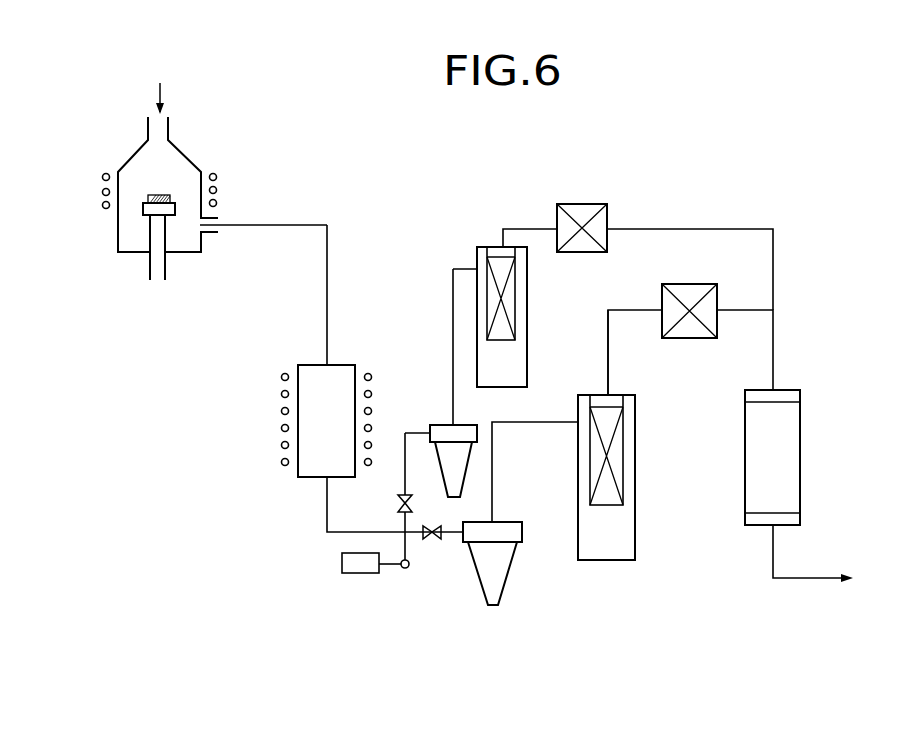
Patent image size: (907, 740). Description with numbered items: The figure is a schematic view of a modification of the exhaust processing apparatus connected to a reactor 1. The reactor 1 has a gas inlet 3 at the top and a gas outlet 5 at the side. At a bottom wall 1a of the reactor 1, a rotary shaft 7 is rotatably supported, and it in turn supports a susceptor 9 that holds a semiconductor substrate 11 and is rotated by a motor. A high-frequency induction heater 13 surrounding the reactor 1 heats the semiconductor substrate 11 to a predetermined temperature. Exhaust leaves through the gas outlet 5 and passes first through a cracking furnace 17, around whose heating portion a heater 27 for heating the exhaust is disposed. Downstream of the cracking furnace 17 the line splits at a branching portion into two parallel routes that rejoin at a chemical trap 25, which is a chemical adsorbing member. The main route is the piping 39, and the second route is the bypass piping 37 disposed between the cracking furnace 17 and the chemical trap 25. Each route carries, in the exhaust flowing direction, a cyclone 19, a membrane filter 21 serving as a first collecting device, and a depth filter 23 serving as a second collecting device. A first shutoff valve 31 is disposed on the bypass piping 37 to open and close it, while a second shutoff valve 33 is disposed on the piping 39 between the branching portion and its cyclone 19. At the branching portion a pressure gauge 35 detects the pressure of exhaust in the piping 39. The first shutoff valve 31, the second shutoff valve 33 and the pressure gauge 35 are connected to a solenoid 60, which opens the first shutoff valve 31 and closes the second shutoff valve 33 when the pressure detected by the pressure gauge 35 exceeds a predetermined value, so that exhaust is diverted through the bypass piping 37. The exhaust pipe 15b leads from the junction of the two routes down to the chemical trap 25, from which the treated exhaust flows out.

The reactor 1 is at (113, 243).
The bottom wall 1a is at (128, 254).
The gas inlet 3 is at (170, 127).
The gas outlet 5 is at (208, 233).
The rotary shaft 7 is at (165, 268).
The susceptor 9 is at (143, 210).
The semiconductor substrate 11 is at (160, 195).
The high-frequency induction heater 13 is at (101, 177).
The exhaust pipe 15b is at (775, 308).
The cracking furnace 17 is at (290, 480).
The cyclone 19 is at (464, 476).
The membrane filter 21 is at (528, 363).
The depth filter 23 is at (577, 252).
The chemical trap 25 is at (798, 488).
The heater 27 is at (371, 425).
The first shutoff valve 31 is at (397, 506).
The second shutoff valve 33 is at (432, 541).
The pressure gauge 35 is at (408, 568).
The bypass piping 37 is at (652, 228).
The piping 39 is at (610, 363).
The solenoid 60 is at (363, 573).